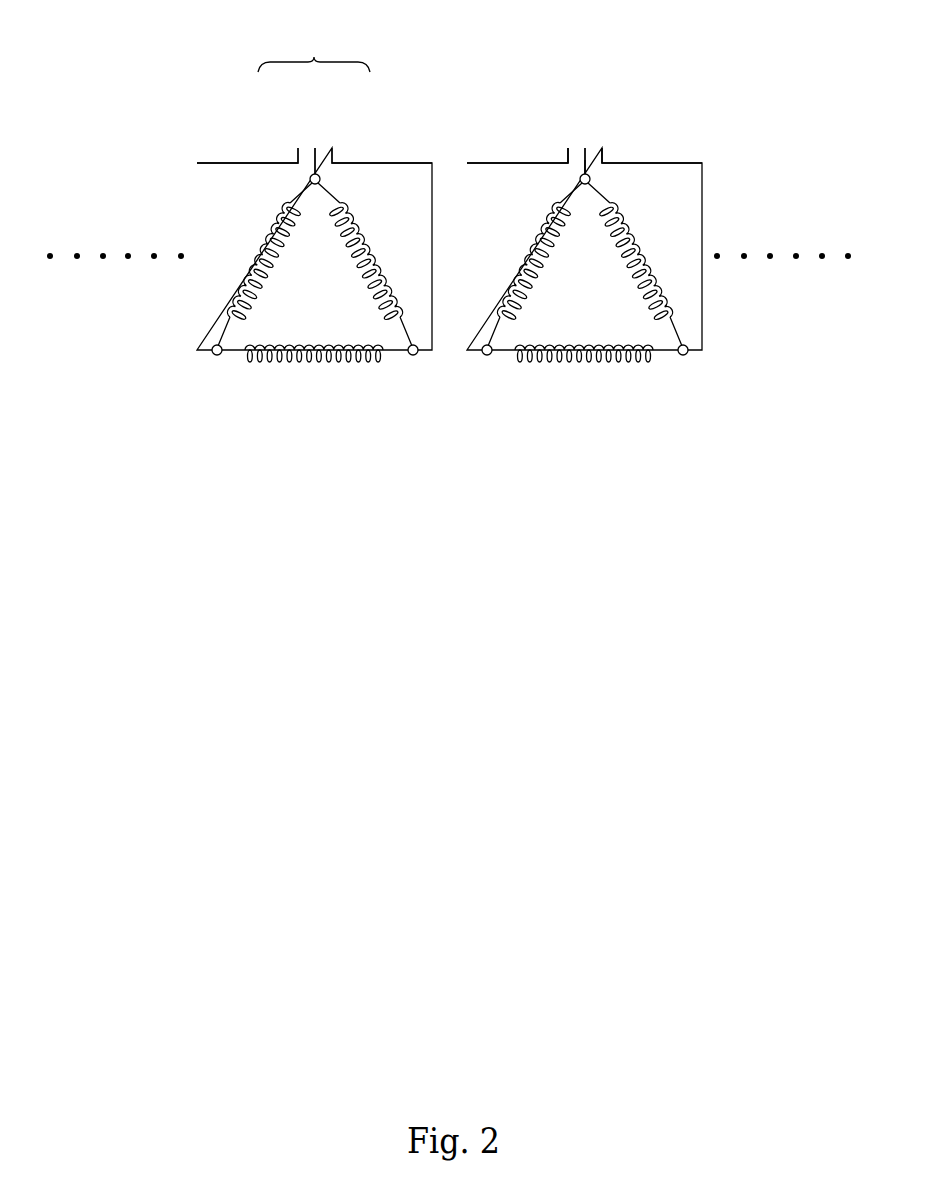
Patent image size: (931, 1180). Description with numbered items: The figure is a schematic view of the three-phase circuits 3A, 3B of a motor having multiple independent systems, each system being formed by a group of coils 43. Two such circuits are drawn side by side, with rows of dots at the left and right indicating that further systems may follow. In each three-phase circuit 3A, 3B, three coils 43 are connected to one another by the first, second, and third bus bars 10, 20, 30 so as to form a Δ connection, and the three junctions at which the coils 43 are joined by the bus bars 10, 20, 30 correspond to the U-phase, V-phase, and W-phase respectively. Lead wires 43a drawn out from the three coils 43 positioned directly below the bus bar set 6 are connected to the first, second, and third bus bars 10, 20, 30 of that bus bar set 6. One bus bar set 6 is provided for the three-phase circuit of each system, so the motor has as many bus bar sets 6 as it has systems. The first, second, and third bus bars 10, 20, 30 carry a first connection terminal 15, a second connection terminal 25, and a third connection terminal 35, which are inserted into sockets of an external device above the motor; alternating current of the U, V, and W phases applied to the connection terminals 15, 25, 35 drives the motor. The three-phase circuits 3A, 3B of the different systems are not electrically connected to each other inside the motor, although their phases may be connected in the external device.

The three-phase circuit 3A is at (200, 124).
The three-phase circuit 3B is at (480, 124).
The bus bar set 6 is at (314, 57).
The first bus bar 10 is at (287, 160).
The second bus bar 20 is at (363, 160).
The third bus bar 30 is at (317, 150).
The first connection terminal 15 is at (567, 148).
The second connection terminal 25 is at (590, 157).
The third connection terminal 35 is at (583, 157).
The coil 43 is at (275, 222).
The lead wire 43a is at (300, 192).